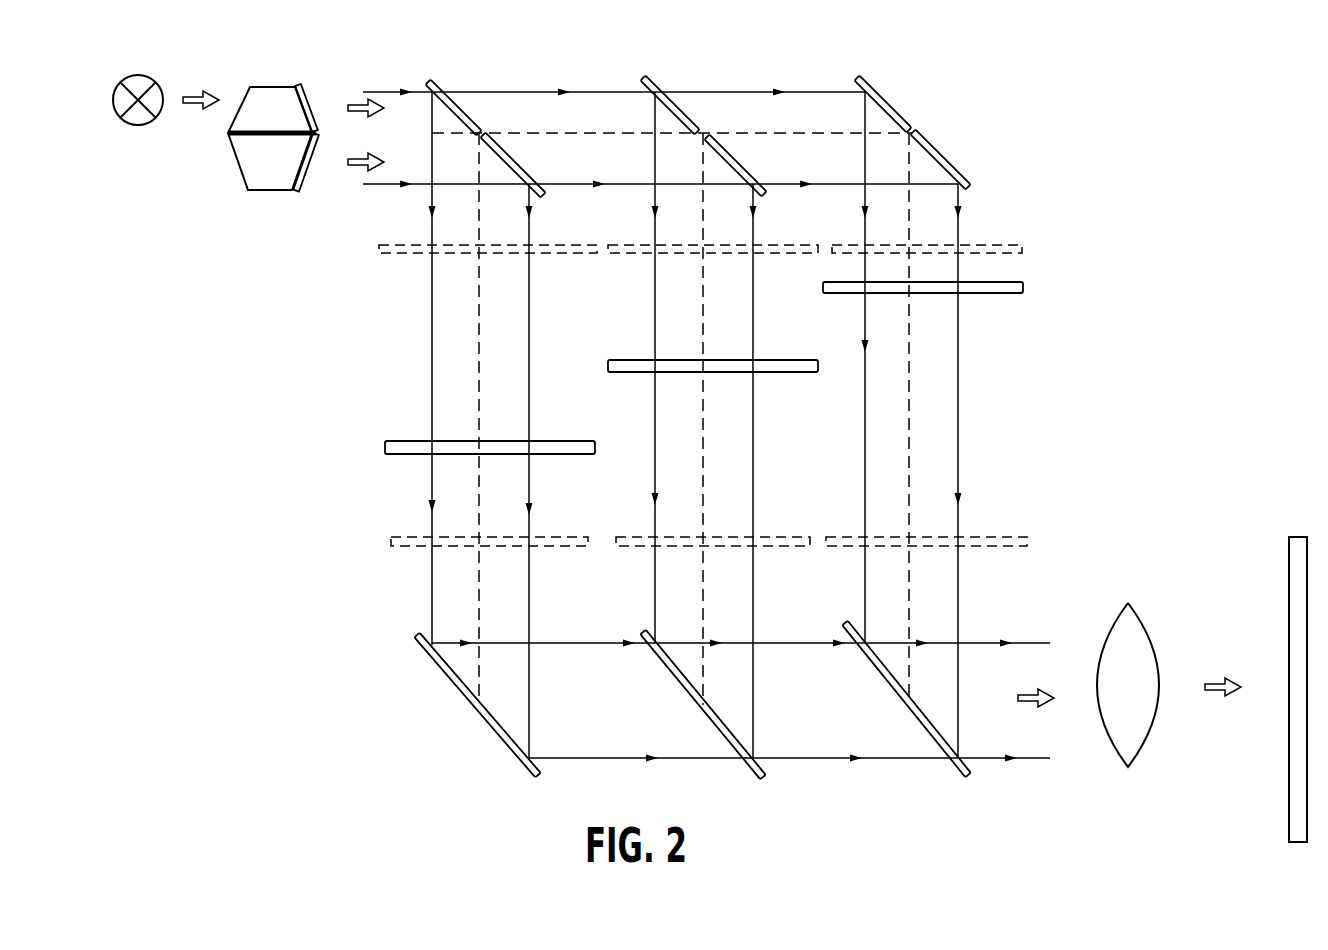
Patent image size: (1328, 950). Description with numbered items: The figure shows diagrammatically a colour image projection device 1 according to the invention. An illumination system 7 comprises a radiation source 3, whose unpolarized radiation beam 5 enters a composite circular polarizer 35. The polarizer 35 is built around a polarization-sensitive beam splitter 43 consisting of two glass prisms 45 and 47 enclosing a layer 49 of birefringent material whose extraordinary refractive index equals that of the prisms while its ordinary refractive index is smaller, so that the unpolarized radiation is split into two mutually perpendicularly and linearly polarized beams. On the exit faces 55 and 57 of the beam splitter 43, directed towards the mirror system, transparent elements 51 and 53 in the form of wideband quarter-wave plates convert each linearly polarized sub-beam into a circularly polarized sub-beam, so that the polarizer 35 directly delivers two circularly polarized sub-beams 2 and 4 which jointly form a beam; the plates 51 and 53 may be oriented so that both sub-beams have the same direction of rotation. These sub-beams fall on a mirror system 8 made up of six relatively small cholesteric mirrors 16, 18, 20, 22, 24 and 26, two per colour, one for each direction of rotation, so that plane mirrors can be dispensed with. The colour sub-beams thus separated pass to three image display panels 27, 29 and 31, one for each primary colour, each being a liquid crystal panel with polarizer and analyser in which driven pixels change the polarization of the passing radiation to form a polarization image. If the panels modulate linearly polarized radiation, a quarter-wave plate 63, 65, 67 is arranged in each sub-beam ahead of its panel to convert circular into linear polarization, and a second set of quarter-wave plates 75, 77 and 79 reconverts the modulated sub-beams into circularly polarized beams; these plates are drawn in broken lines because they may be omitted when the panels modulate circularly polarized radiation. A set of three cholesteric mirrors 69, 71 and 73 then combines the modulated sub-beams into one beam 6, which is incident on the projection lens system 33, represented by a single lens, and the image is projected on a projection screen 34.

The colour image projection device 1 is at (633, 719).
The circularly polarized sub-beam 2 is at (362, 92).
The radiation source 3 is at (118, 121).
The circularly polarized sub-beam 4 is at (357, 187).
The unpolarized radiation beam 5 is at (190, 92).
The beam 6 is at (1053, 703).
The illumination system 7 is at (616, 421).
The mirror system 8 is at (743, 120).
The cholesteric mirror 16 is at (462, 108).
The cholesteric mirror 18 is at (510, 157).
The cholesteric mirror 20 is at (667, 93).
The cholesteric mirror 22 is at (728, 150).
The cholesteric mirror 24 is at (897, 108).
The cholesteric mirror 26 is at (940, 150).
The image display panel 27 is at (568, 447).
The image display panel 29 is at (680, 367).
The image display panel 31 is at (885, 288).
The projection lens system 33 is at (1130, 768).
The projection screen 34 is at (1288, 842).
The composite circular polarizer 35 is at (271, 128).
The beam splitter 43 is at (237, 167).
The glass prism 45 is at (265, 100).
The glass prism 47 is at (267, 175).
The layer of birefringent material 49 is at (228, 135).
The transparent element 51 is at (303, 102).
The transparent element 53 is at (302, 175).
The exit face 55 is at (317, 130).
The exit face 57 is at (295, 153).
The λ/4 plate 63 is at (380, 250).
The λ/4 plate 65 is at (620, 255).
The λ/4 plate 67 is at (1022, 250).
The cholesteric mirror 69 is at (510, 748).
The cholesteric mirror 71 is at (752, 770).
The cholesteric mirror 73 is at (957, 770).
The λ/4 plate 75 is at (463, 543).
The λ/4 plate 77 is at (690, 548).
The λ/4 plate 79 is at (895, 548).